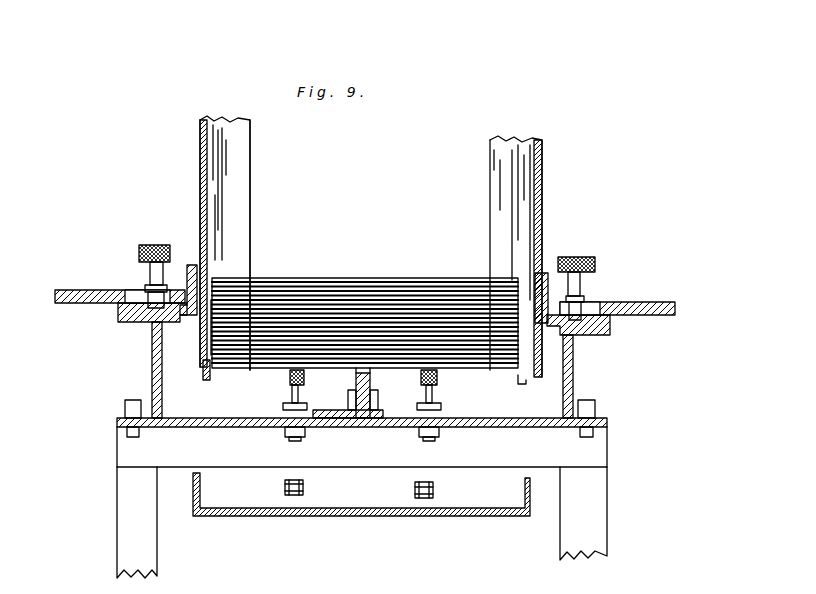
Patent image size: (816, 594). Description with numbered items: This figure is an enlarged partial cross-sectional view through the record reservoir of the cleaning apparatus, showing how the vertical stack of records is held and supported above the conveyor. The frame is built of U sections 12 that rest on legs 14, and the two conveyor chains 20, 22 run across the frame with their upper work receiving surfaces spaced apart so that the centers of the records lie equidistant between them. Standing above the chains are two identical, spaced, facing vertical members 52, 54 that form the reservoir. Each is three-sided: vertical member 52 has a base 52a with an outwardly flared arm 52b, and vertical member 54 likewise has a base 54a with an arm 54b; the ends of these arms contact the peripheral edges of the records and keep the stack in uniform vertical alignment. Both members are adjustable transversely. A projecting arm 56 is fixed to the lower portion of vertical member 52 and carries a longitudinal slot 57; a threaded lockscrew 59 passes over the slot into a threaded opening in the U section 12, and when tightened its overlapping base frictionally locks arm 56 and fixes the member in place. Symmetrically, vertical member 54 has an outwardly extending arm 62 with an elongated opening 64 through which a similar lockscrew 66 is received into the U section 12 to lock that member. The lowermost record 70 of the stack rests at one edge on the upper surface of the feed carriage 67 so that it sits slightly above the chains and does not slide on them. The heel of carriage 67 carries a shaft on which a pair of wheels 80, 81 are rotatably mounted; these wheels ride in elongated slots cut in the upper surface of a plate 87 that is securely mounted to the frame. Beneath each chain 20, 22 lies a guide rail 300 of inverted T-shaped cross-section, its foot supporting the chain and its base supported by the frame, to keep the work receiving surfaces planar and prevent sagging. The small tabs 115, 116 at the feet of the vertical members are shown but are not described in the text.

The U section 12 is at (152, 347).
The leg 14 is at (117, 525).
The conveyor chain 20 is at (438, 380).
The conveyor chain 22 is at (290, 380).
The vertical member 52 is at (219, 242).
The base 52a is at (200, 170).
The arm 52b is at (250, 163).
The vertical member 54 is at (513, 256).
The base 54a is at (542, 192).
The arm 54b is at (490, 180).
The projecting arm 56 is at (62, 290).
The longitudinal slot 57 is at (130, 290).
The lockscrew 59 is at (153, 245).
The outwardly extending arm 62 is at (676, 308).
The elongated opening 64 is at (590, 302).
The lockscrew 66 is at (585, 257).
The feed carriage 67 is at (355, 381).
The lowermost record 70 is at (224, 370).
The wheel 80 is at (371, 378).
The wheel 81 is at (347, 428).
The plate 87 is at (378, 400).
The tab 115 is at (204, 381).
The tab 116 is at (522, 386).
The guide rail 300 is at (283, 405).